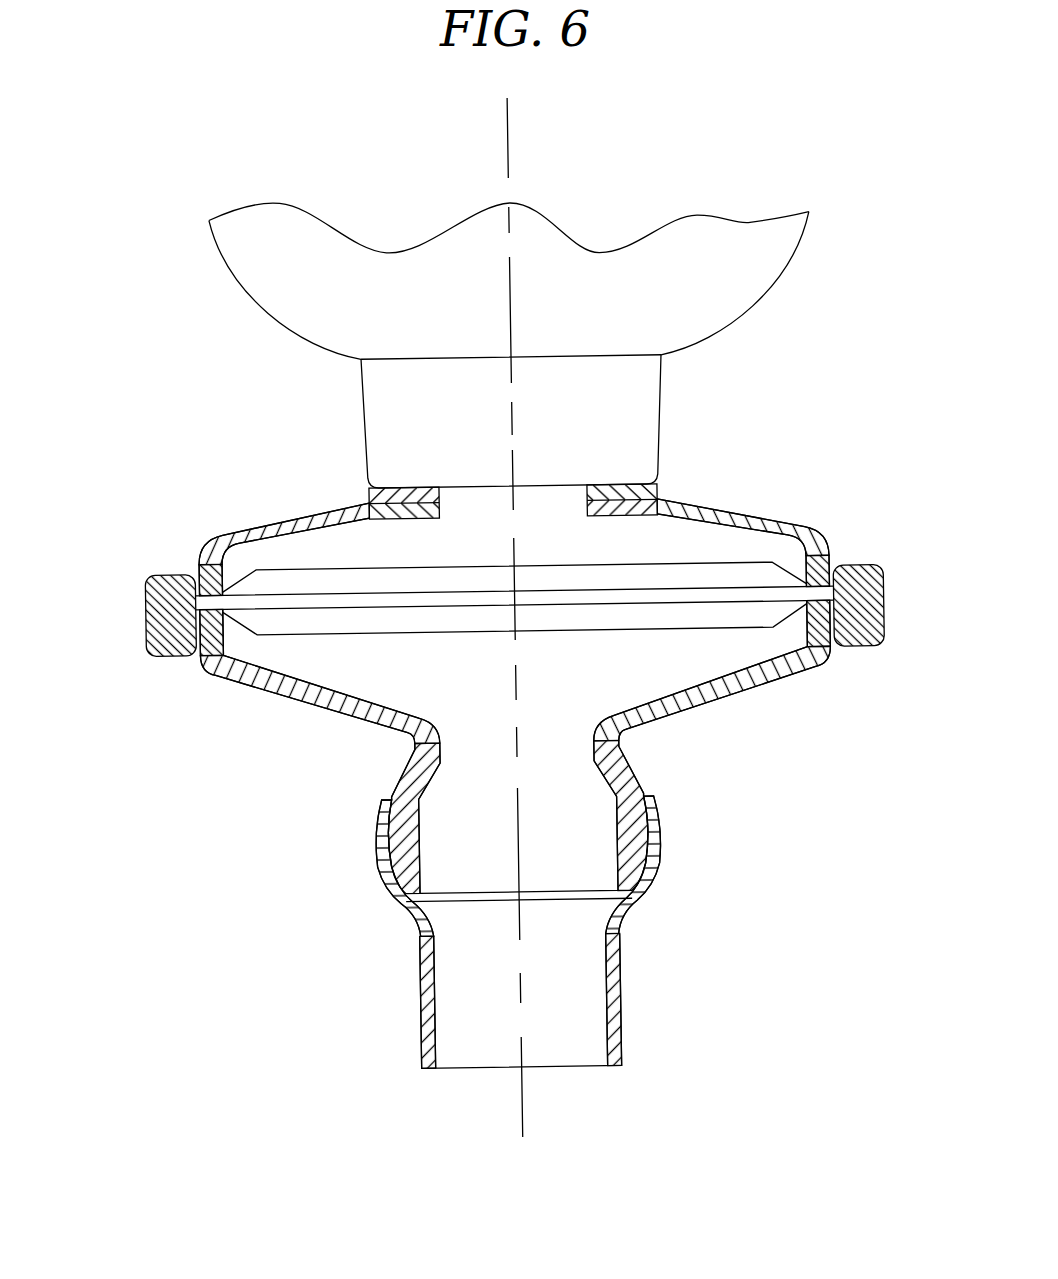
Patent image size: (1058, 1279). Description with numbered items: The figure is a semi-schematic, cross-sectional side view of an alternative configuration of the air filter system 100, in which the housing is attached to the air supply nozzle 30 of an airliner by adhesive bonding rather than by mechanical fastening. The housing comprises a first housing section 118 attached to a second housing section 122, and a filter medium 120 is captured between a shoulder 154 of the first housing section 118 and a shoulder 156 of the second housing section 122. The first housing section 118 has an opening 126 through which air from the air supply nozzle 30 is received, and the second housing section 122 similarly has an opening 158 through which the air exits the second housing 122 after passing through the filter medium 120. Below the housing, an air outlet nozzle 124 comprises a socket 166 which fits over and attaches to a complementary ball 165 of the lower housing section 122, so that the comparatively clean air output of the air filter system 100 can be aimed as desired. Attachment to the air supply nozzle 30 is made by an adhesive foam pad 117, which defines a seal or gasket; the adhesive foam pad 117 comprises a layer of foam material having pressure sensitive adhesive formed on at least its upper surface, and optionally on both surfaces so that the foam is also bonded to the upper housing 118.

The air supply nozzle 30 is at (601, 431).
The air filter system 100 is at (495, 617).
The adhesive foam pad 117 is at (660, 492).
The first housing section 118 is at (760, 515).
The filter medium 120 is at (513, 520).
The second housing section 122 is at (515, 670).
The air outlet nozzle 124 is at (413, 1015).
The opening 126 is at (590, 512).
The shoulder 154 is at (193, 591).
The shoulder 156 is at (869, 571).
The opening 158 is at (593, 736).
The ball 165 is at (415, 847).
The socket 166 is at (654, 872).